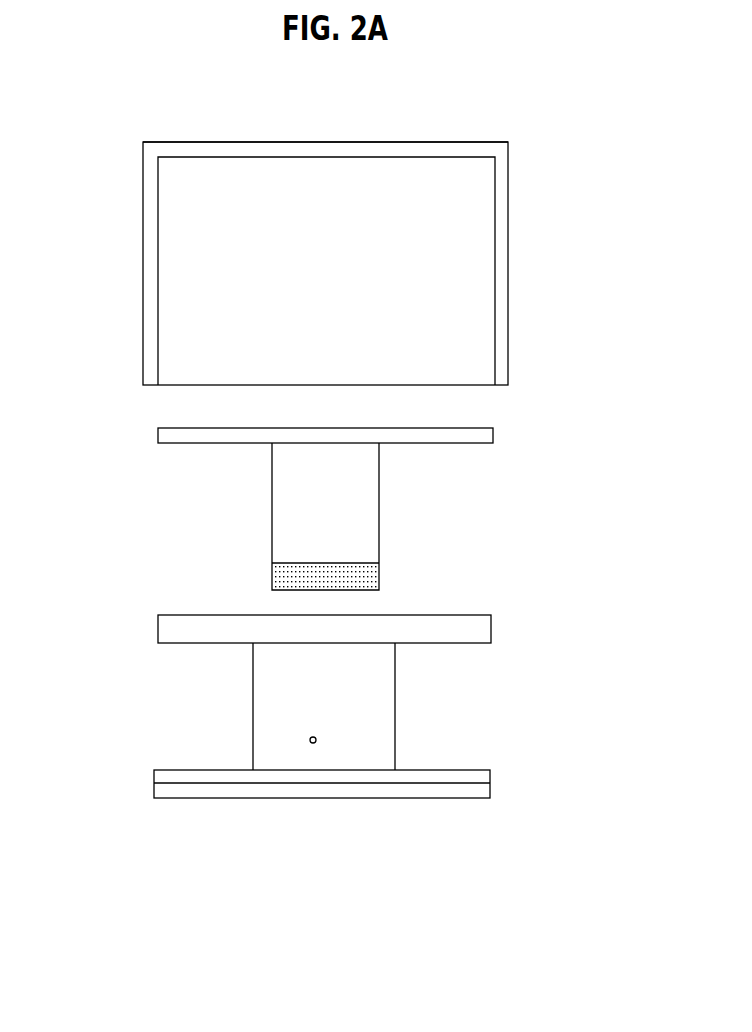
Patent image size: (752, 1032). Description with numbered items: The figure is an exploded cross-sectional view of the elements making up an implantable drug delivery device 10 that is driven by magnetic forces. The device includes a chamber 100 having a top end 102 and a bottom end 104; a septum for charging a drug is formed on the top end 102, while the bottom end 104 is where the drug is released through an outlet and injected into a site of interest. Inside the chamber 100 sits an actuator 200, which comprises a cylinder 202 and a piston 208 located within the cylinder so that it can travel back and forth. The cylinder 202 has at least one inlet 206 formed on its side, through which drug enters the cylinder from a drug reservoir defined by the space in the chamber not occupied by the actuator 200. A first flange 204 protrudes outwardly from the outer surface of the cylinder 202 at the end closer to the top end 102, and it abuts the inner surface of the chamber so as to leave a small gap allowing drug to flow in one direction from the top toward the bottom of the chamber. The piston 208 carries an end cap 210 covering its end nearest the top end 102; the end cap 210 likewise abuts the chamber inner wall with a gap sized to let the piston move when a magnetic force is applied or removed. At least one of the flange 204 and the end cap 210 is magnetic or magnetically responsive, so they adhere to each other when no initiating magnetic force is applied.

The device 10 is at (523, 200).
The chamber 100 is at (508, 277).
The top end of the chamber 102 is at (430, 142).
The bottom end of the chamber 104 is at (410, 790).
The actuator 200 is at (147, 414).
The cylinder 202 is at (385, 707).
The flange 204 is at (477, 627).
The inlet 206 is at (316, 739).
The piston 208 is at (370, 510).
The end cap 210 is at (480, 437).